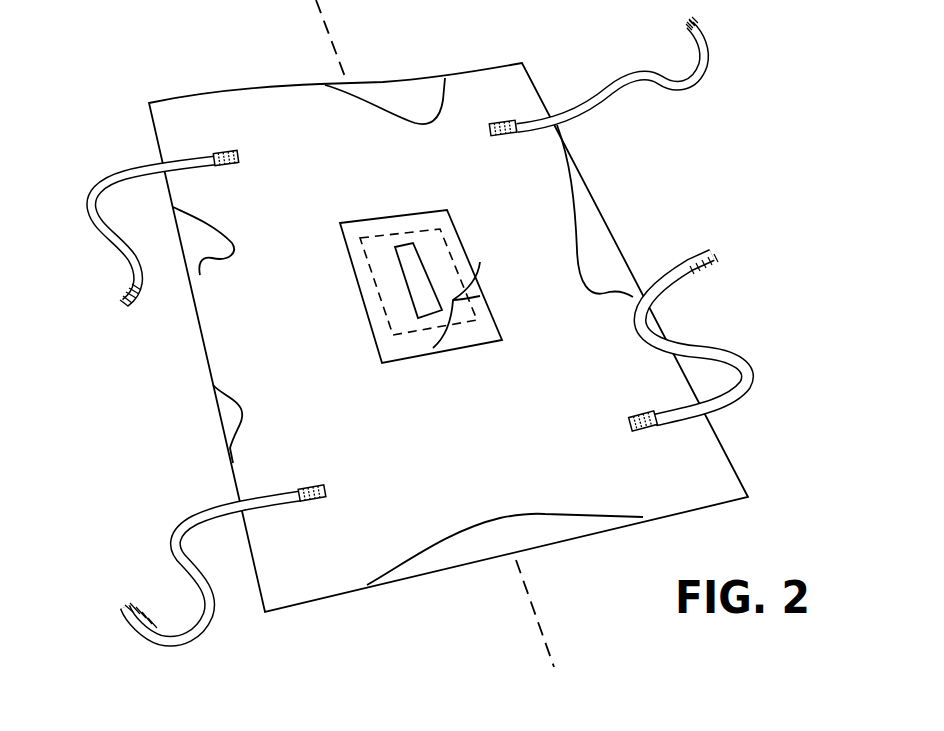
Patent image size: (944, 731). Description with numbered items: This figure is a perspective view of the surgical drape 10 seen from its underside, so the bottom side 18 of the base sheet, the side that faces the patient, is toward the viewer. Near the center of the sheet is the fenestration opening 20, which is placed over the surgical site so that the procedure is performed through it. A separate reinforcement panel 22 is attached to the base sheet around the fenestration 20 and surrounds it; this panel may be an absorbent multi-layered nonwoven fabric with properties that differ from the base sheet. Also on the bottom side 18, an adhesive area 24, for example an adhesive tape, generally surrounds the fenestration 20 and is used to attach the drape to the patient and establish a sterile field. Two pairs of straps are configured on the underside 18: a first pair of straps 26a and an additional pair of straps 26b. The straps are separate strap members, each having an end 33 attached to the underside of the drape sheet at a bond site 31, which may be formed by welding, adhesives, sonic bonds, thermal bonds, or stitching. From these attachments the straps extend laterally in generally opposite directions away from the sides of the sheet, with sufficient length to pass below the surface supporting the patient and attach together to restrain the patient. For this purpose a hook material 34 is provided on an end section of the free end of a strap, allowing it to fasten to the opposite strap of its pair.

The surgical drape 10 is at (426, 333).
The bottom side 18 is at (237, 373).
The fenestration opening 20 is at (422, 267).
The reinforcement panel 22 is at (478, 331).
The adhesive area 24 is at (473, 262).
The straps 26a is at (133, 168).
The additional pair of straps 26b is at (204, 520).
The bond sites 31 is at (220, 165).
The end 33 is at (218, 155).
The hook material 34 is at (693, 33).